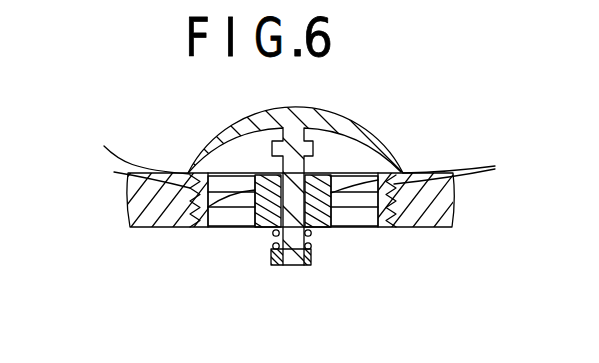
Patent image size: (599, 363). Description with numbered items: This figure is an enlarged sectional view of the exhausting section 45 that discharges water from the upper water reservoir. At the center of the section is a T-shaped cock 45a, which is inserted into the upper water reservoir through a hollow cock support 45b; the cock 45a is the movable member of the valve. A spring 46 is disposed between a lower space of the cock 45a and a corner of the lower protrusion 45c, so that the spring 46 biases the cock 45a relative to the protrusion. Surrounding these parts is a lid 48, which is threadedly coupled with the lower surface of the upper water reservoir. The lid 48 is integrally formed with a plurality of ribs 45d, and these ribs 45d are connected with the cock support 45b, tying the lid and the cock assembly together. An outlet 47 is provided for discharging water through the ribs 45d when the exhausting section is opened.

The exhausting section 45 is at (403, 151).
The T-shaped cock 45a is at (365, 128).
The cock support 45b is at (246, 222).
The lower protrusion 45c is at (271, 262).
The ribs 45d is at (297, 155).
The spring 46 is at (273, 237).
The outlet 47 is at (220, 224).
The lid 48 is at (203, 226).